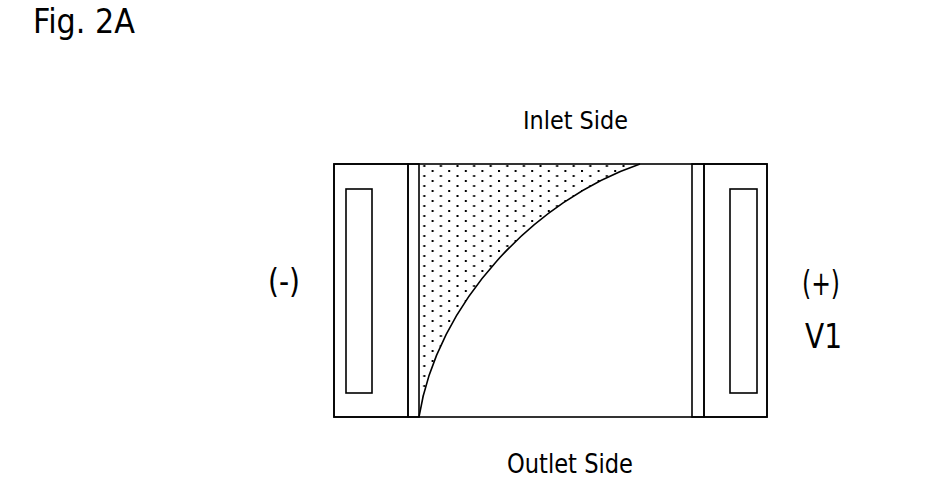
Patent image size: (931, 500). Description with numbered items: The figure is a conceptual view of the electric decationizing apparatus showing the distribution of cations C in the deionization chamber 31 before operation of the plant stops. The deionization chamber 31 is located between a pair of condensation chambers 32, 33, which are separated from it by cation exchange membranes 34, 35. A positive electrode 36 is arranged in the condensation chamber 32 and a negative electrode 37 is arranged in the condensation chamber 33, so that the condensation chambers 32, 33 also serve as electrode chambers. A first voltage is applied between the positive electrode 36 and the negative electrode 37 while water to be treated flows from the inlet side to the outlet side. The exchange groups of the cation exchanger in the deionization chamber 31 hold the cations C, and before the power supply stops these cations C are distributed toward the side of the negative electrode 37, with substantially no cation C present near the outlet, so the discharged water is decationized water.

The deionization chamber 31 is at (490, 172).
The condensation chamber 32 is at (750, 175).
The condensation chamber 33 is at (368, 175).
The cation exchange membrane 34 is at (700, 162).
The cation exchange membrane 35 is at (418, 162).
The positive electrode 36 is at (745, 233).
The negative electrode 37 is at (350, 233).
The cations C is at (452, 293).